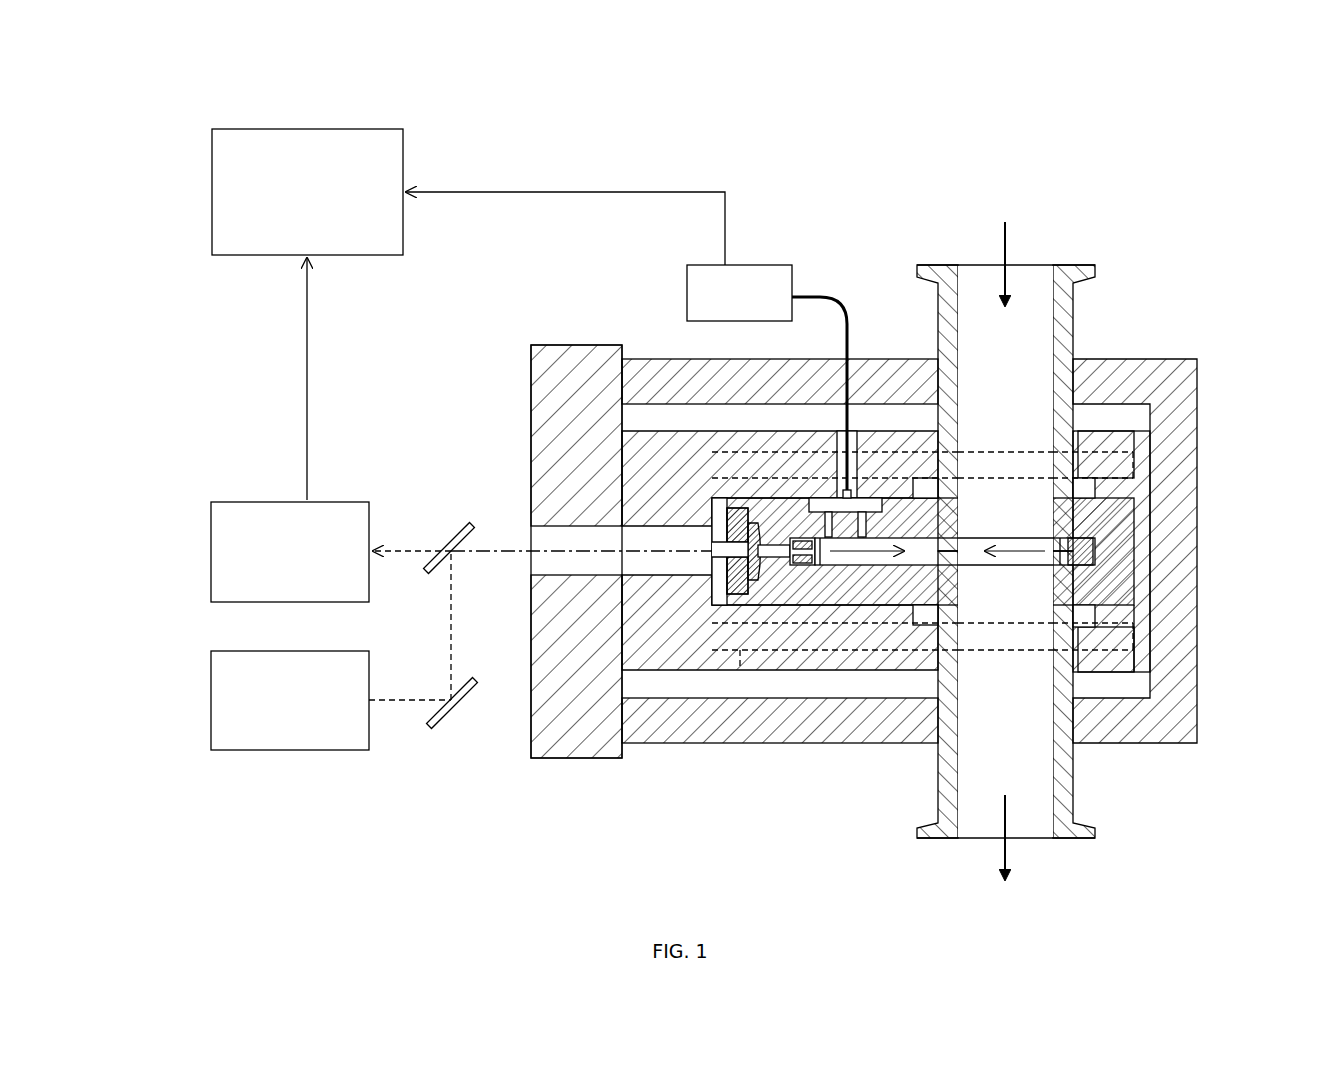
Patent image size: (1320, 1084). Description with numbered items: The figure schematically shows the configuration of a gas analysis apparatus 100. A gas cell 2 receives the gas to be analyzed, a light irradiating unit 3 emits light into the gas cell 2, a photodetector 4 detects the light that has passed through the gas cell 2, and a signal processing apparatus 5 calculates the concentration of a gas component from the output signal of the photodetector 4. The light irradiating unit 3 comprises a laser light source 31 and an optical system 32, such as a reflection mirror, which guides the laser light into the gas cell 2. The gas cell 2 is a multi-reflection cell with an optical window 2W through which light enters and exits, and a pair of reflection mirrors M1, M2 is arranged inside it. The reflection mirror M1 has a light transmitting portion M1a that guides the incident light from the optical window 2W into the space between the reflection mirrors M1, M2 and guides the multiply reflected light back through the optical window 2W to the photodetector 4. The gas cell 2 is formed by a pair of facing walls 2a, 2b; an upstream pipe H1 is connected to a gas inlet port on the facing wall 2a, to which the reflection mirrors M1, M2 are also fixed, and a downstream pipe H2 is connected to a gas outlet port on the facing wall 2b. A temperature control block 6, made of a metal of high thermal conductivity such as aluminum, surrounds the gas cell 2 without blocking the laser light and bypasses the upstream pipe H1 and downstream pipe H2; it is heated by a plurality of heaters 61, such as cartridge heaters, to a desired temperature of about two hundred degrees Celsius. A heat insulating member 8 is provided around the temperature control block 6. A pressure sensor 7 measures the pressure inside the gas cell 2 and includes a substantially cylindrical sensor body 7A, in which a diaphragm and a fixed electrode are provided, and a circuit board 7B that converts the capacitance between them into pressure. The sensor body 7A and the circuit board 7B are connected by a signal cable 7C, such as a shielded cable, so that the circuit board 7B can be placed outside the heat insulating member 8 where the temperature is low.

The gas analysis apparatus 100 is at (209, 103).
The signal processing apparatus 5 is at (307, 128).
The photodetector 4 is at (210, 551).
The light irradiating unit 3 is at (321, 638).
The laser light source 31 is at (210, 701).
The optical system 32 is at (428, 573).
The heat insulating member 8 is at (667, 359).
The temperature control block 6 is at (756, 431).
The heater 61 is at (790, 455).
The gas cell 2 is at (950, 640).
The facing wall 2a is at (1097, 517).
The facing wall 2b is at (1078, 600).
The optical window 2W is at (725, 578).
The reflection mirror M1 is at (829, 663).
The light transmitting portion M1a is at (813, 568).
The reflection mirror M2 is at (1085, 567).
The pressure sensor 7 is at (795, 348).
The sensor body 7A is at (850, 520).
The circuit board 7B is at (755, 263).
The signal cable 7C is at (825, 290).
The upstream pipe H1 is at (1075, 325).
The downstream pipe H2 is at (1075, 790).